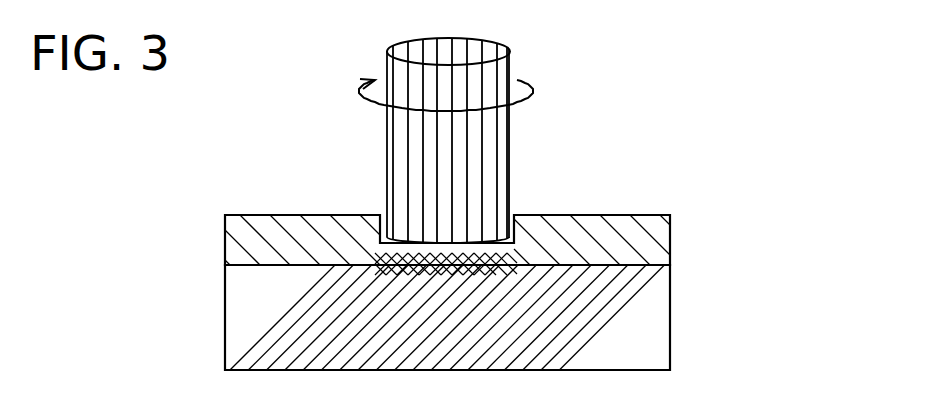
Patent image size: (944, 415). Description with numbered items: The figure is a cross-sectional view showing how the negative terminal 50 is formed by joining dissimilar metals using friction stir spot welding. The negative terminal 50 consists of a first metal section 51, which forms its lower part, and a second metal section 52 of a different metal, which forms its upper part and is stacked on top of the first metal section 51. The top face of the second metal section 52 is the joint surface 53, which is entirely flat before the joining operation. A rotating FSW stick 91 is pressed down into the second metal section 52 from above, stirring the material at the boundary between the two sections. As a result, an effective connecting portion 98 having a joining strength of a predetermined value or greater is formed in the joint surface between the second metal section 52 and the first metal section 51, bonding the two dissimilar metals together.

The negative terminal 50 is at (551, 292).
The first metal section 51 is at (623, 303).
The second metal section 52 is at (623, 248).
The joint surface 53 is at (310, 213).
The FSW stick 91 is at (475, 152).
The effective connecting portion 98 is at (405, 270).